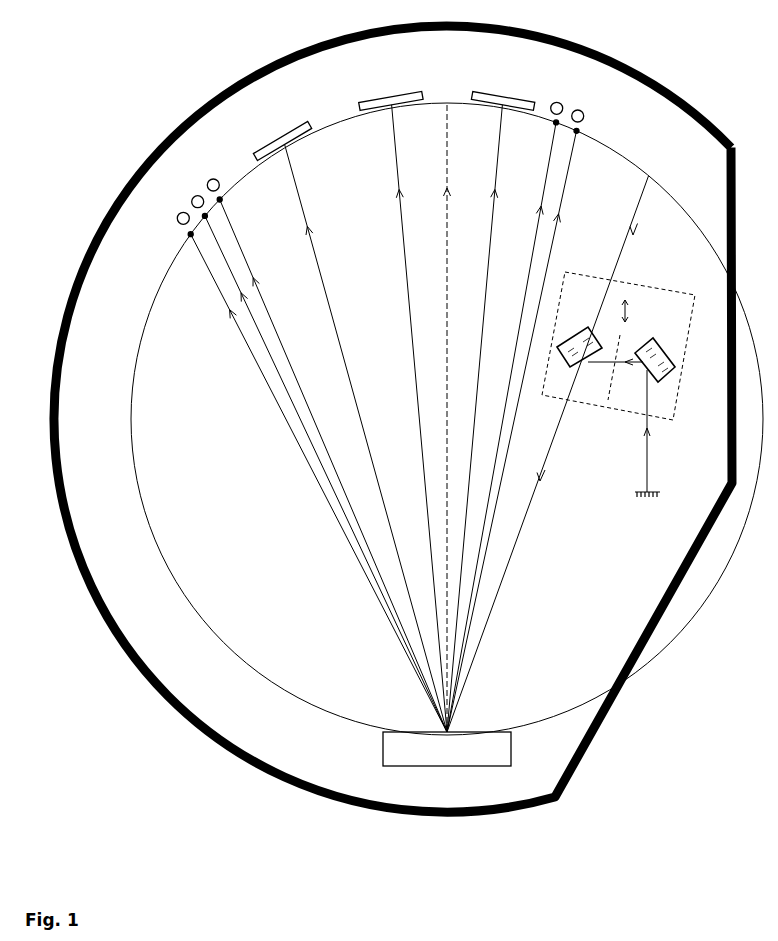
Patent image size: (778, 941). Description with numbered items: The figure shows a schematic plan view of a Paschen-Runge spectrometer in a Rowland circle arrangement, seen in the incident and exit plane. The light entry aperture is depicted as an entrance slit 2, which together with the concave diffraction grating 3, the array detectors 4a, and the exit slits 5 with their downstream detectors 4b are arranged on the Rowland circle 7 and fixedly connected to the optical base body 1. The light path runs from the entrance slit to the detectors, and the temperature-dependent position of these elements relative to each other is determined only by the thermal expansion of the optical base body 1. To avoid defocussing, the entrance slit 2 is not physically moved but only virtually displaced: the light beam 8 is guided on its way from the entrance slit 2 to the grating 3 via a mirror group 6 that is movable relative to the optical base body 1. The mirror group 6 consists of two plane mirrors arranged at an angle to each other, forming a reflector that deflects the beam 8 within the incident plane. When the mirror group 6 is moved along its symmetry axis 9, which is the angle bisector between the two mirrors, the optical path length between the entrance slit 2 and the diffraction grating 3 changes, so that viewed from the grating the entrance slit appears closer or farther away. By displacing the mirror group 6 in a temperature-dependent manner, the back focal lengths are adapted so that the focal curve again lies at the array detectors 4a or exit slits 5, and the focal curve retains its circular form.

The optical base body 1 is at (653, 632).
The entrance slit 2 is at (658, 488).
The concave diffraction grating 3 is at (383, 747).
The array detectors 4a is at (395, 98).
The detectors 4b is at (218, 178).
The exit slits 5 is at (580, 132).
The mirror group 6 is at (630, 283).
The Rowland circle 7 is at (130, 420).
The light beam 8 is at (647, 458).
The symmetry axis 9 is at (620, 348).